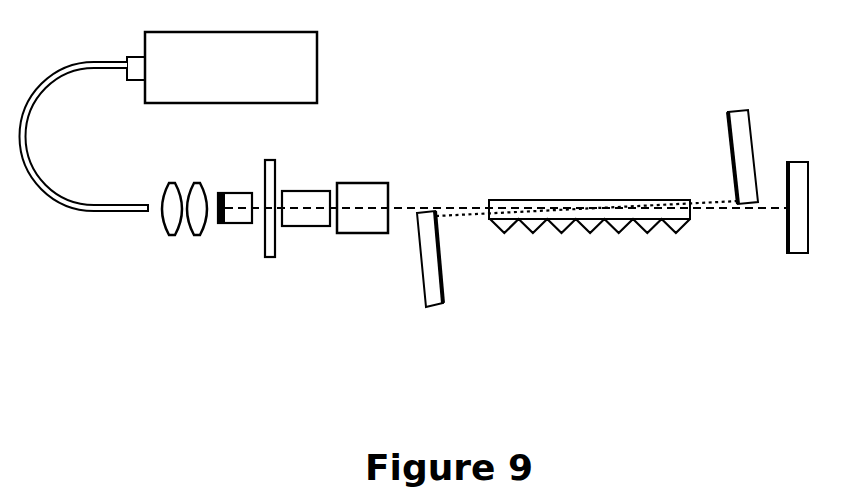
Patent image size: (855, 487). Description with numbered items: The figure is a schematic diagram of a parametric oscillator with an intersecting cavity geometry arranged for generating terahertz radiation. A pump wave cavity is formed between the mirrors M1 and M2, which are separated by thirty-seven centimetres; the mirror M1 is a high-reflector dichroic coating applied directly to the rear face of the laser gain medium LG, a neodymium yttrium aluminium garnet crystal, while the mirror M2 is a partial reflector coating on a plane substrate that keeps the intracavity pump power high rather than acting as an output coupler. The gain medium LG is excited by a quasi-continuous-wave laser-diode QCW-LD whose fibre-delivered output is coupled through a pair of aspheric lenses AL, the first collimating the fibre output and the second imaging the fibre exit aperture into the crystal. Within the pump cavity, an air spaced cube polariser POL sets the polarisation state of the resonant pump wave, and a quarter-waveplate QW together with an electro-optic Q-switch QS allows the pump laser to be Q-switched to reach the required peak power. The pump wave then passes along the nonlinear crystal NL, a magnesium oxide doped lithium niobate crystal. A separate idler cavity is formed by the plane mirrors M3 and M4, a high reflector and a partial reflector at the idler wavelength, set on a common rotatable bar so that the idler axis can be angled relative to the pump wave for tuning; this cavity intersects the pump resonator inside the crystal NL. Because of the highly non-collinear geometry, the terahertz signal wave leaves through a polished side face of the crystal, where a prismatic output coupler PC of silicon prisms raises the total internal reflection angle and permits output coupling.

The quasi-continuous-wave laser-diode QCW-LD is at (170, 122).
The aspheric lenses AL is at (184, 193).
The laser gain medium LG is at (234, 187).
The high reflector mirror M1 is at (221, 230).
The quarter-waveplate QW is at (269, 223).
The electro-optic Q-switch QS is at (306, 188).
The air spaced cube polariser POL is at (362, 220).
The partial reflector mirror M4 is at (432, 272).
The nonlinear crystal NL is at (589, 194).
The prismatic output coupler PC is at (590, 239).
The high reflector mirror M3 is at (740, 142).
The partial reflector mirror M2 is at (795, 224).